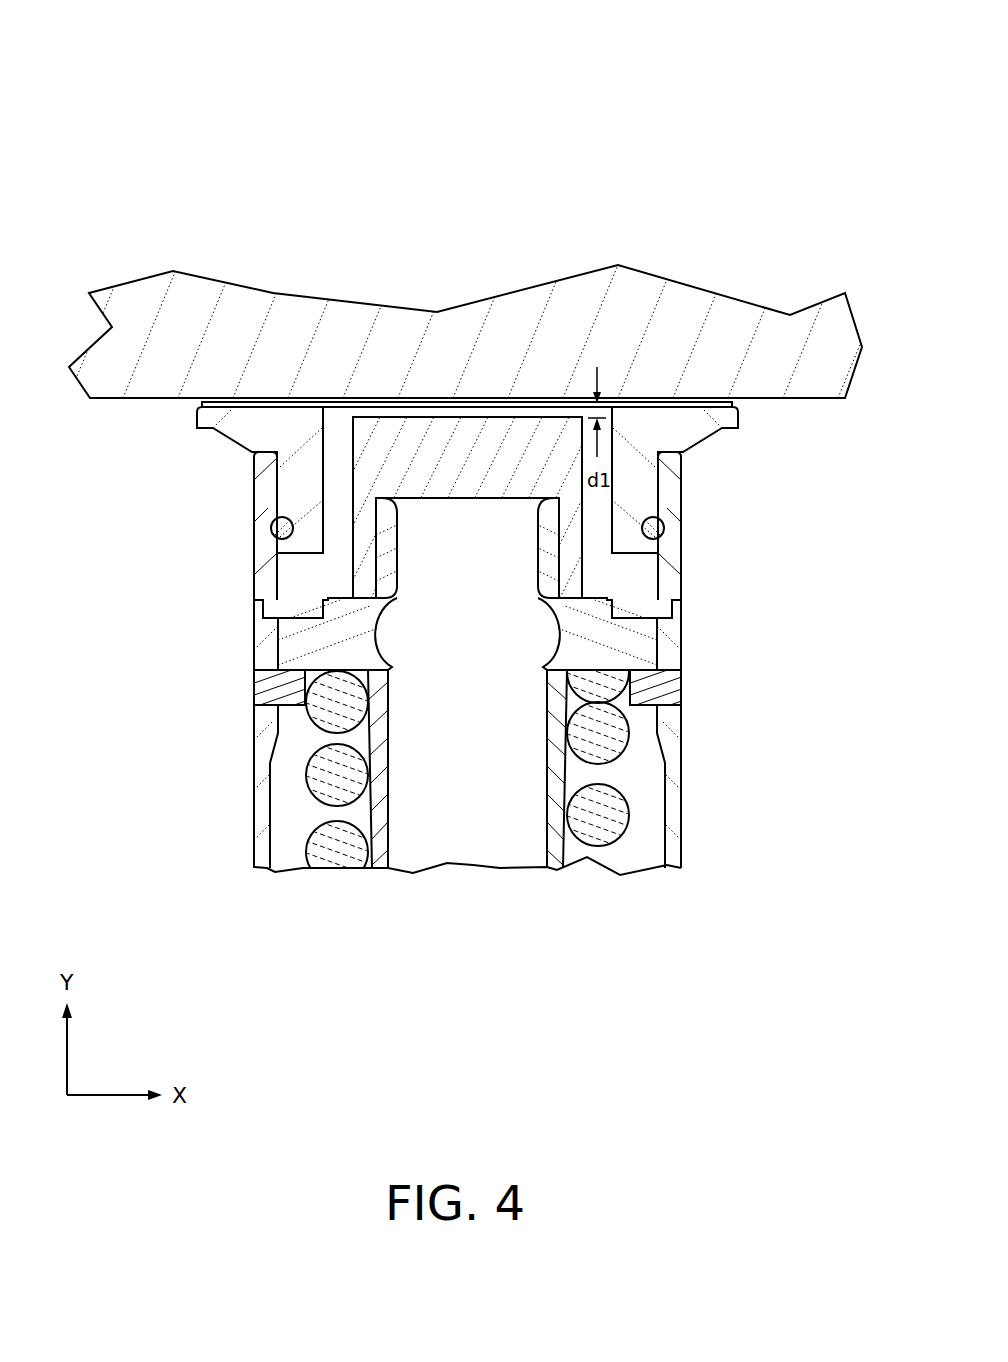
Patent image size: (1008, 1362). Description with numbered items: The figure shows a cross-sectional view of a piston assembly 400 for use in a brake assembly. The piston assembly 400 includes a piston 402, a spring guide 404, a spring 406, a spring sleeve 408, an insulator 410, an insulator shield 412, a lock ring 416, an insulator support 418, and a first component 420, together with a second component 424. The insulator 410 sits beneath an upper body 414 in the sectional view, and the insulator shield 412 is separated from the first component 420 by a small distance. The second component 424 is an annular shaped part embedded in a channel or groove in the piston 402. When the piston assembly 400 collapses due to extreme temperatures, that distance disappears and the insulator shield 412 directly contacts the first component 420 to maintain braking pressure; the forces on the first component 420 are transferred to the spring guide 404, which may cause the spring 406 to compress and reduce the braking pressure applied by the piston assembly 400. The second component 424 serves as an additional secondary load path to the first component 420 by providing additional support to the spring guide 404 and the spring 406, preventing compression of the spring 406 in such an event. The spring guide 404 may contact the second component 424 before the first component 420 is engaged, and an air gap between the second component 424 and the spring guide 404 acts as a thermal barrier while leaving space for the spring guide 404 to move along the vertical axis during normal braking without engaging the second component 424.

The piston assembly 400 is at (319, 111).
The piston 402 is at (257, 846).
The spring guide 404 is at (383, 868).
The spring 406 is at (323, 868).
The spring sleeve 408 is at (642, 857).
The insulator 410 is at (213, 428).
The insulator shield 412 is at (727, 398).
The mounting body 414 is at (748, 315).
The lock ring 416 is at (263, 610).
The insulator support 418 is at (272, 533).
The first component 420 is at (482, 417).
The second component 424 is at (254, 678).